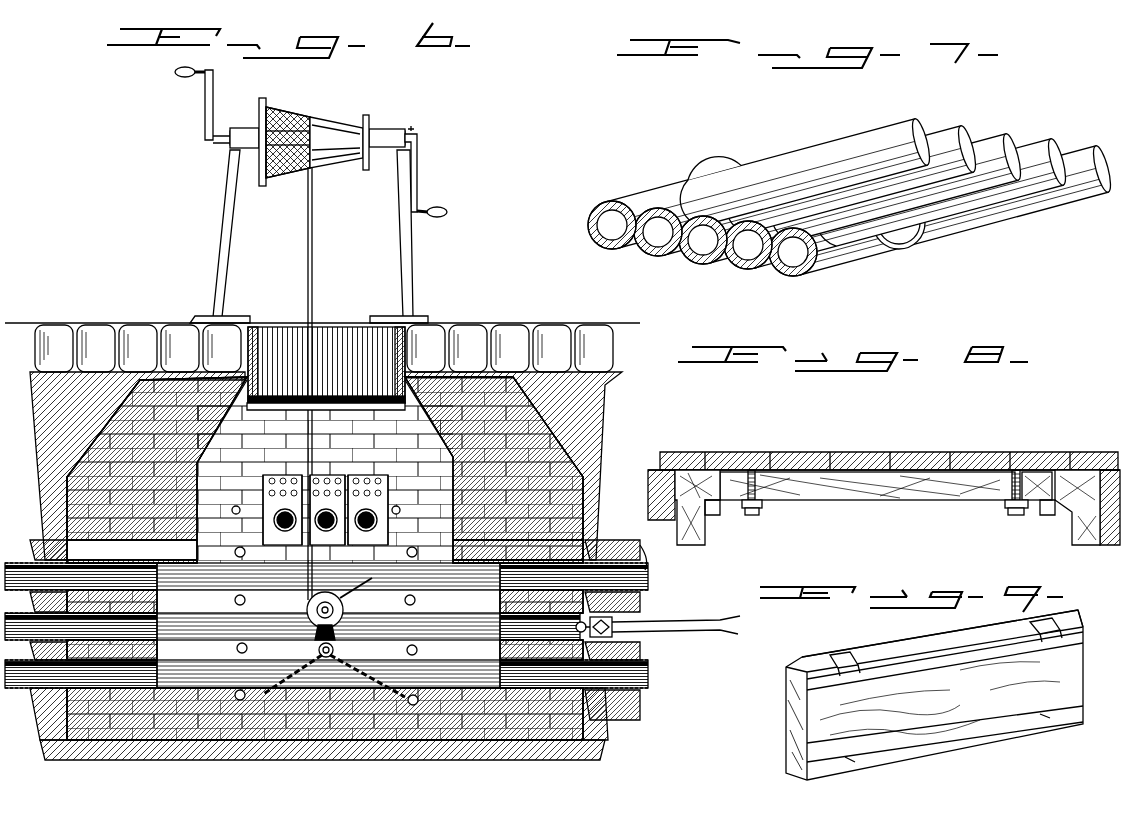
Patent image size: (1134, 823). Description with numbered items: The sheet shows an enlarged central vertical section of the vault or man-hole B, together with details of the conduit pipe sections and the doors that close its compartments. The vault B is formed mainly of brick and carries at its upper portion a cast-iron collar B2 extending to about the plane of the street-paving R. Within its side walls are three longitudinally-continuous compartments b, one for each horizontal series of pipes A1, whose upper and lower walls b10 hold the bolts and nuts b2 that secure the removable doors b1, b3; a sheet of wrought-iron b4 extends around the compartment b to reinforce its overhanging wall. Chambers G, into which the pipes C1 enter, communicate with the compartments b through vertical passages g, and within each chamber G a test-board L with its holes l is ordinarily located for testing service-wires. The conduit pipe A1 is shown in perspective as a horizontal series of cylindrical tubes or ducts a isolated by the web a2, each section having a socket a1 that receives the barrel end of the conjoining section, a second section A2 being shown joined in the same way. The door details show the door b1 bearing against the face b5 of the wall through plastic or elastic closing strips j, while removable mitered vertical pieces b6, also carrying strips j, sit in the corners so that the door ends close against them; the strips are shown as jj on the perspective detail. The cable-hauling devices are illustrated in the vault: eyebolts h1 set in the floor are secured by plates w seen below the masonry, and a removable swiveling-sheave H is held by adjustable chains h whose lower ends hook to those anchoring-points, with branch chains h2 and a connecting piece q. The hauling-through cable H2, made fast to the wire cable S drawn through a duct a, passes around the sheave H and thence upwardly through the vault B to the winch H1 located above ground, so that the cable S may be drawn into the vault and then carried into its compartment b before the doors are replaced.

In FIG. 6, the winch H1 is at (333, 162).
In FIG. 6, the hauling-through cable H2 is at (314, 262).
In FIG. 6, the street-paving R is at (80, 325).
In FIG. 6, the cast-iron collar B2 is at (392, 358).
In FIG. 6, the vault B is at (326, 416).
In FIG. 6, the test-board L is at (265, 478).
In FIG. 6, the panel holes l is at (283, 478).
In FIG. 6, the pipes C1 is at (408, 520).
In FIG. 6, the chamber G is at (268, 530).
In FIG. 6, the tube or duct a is at (326, 625).
In FIG. 7, the tube or duct a is at (701, 239).
In FIG. 6, the compartment b is at (328, 628).
In FIG. 8, the compartment b is at (1054, 486).
In FIG. 6, the face of the walls b5 is at (330, 626).
In FIG. 8, the face of the walls b5 is at (808, 470).
In FIG. 6, the upper and lower walls of the compartments b10 is at (326, 624).
In FIG. 6, the bolts and nuts b2 is at (372, 599).
In FIG. 8, the bolts and nuts b2 is at (760, 510).
In FIG. 6, the sheet of wrought-iron b4 is at (635, 655).
In FIG. 6, the pipe A1 is at (652, 664).
In FIG. 7, the pipe A1 is at (688, 185).
In FIG. 8, the pipe A1 is at (654, 555).
In FIG. 6, the conduit section A2 is at (292, 614).
In FIG. 7, the conduit section A2 is at (908, 128).
In FIG. 6, the wire cable S is at (658, 616).
In FIG. 6, the swiveling-sheave H is at (391, 616).
In FIG. 6, the chains h is at (367, 637).
In FIG. 6, the eyebolts h1 is at (355, 694).
In FIG. 6, the guide rope branch h2 is at (248, 696).
In FIG. 6, the rope sheave q is at (340, 649).
In FIG. 6, the vertical passage g is at (347, 674).
In FIG. 6, the plates w is at (370, 726).
In FIG. 7, the web a2 is at (772, 270).
In FIG. 7, the socket a1 is at (762, 158).
In FIG. 8, the door b1 is at (867, 486).
In FIG. 9, the door b1 is at (934, 695).
In FIG. 8, the mitered vertical piece b6 is at (1074, 540).
In FIG. 8, the door b3 is at (675, 527).
In FIG. 8, the closing strip j is at (722, 510).
In FIG. 8, the joint jj is at (690, 545).
In FIG. 9, the joint jj is at (870, 686).